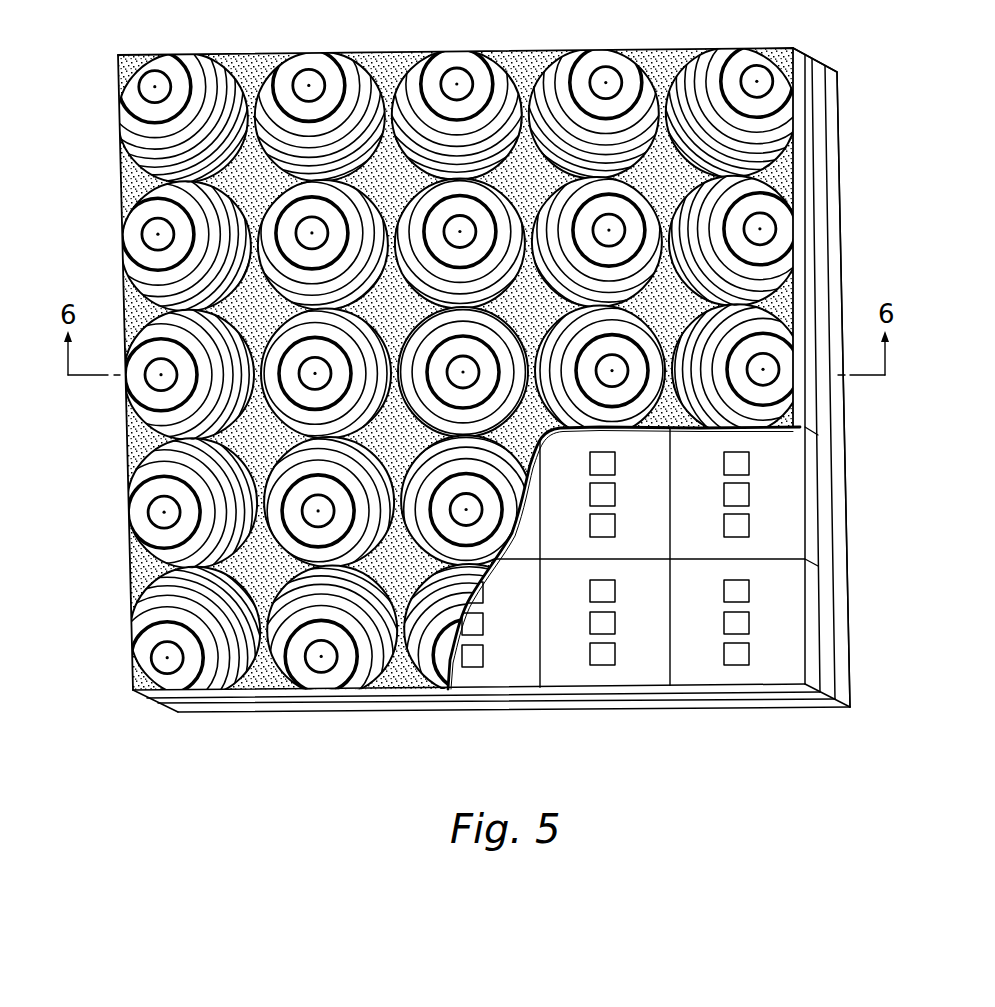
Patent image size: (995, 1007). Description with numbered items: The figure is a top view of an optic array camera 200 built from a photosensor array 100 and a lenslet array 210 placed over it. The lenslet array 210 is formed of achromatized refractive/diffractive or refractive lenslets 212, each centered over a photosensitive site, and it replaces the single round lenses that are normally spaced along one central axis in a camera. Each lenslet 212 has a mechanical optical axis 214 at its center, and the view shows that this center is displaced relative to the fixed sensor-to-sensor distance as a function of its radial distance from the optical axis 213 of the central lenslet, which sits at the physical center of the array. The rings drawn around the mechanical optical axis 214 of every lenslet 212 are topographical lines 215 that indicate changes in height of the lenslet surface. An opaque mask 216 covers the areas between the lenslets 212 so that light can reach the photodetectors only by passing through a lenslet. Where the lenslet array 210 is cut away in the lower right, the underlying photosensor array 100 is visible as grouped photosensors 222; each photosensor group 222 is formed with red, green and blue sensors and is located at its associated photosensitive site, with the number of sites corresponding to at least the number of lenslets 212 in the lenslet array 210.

The photosensor array 100 is at (809, 497).
The optic array camera 200 is at (273, 44).
The lenslet array 210 is at (812, 233).
The lenslet 212 is at (440, 62).
The optical axis of the central lenslet 213 is at (463, 372).
The mechanical optical axis 214 is at (154, 87).
The topographical lines 215 is at (233, 667).
The opaque mask 216 is at (793, 139).
The photosensor group 222 is at (118, 437).